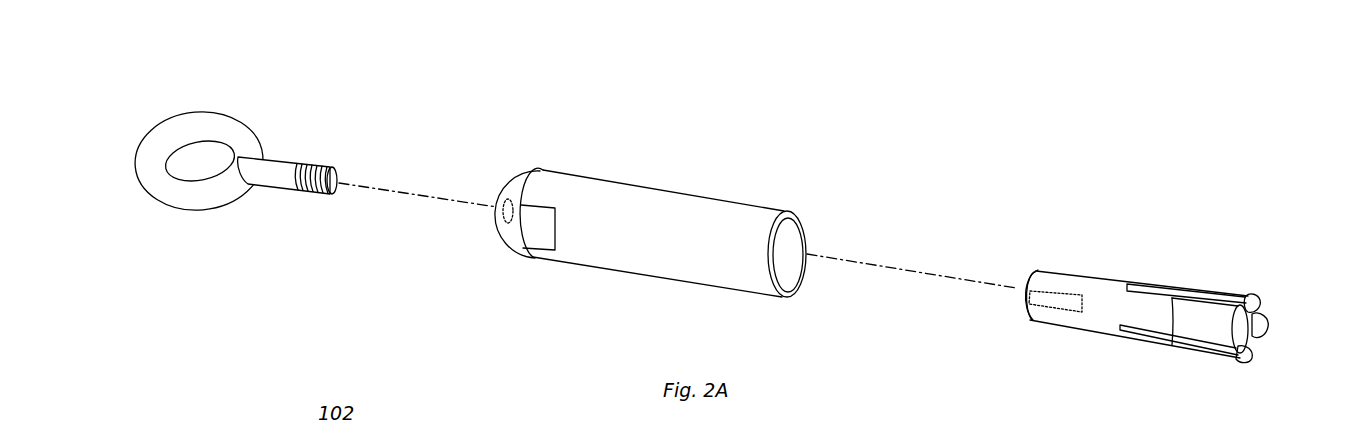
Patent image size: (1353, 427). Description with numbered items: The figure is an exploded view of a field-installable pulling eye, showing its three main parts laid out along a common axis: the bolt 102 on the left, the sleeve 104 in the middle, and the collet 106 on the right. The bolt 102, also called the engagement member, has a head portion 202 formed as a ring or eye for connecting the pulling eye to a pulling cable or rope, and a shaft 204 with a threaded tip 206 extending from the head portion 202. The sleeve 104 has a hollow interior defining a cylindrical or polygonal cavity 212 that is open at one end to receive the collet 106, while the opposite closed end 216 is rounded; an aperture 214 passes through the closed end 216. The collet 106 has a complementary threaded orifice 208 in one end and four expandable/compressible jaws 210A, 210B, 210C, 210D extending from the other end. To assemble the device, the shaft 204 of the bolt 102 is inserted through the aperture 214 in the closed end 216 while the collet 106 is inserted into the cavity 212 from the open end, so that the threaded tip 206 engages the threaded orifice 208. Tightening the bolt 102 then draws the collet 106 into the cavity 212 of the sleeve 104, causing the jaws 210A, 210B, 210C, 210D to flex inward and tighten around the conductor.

The bolt 102 is at (237, 152).
The sleeve 104 is at (646, 209).
The collet 106 is at (1173, 285).
The head portion 202 is at (190, 200).
The shaft 204 is at (273, 173).
The threaded tip 206 is at (315, 187).
The threaded orifice 208 is at (1056, 298).
The jaw 210A is at (1213, 320).
The jaw 210B is at (1245, 360).
The jaw 210C is at (1253, 298).
The jaw 210D is at (1266, 322).
The cavity 212 is at (786, 267).
The aperture 214 is at (503, 221).
The closed end 216 is at (521, 178).